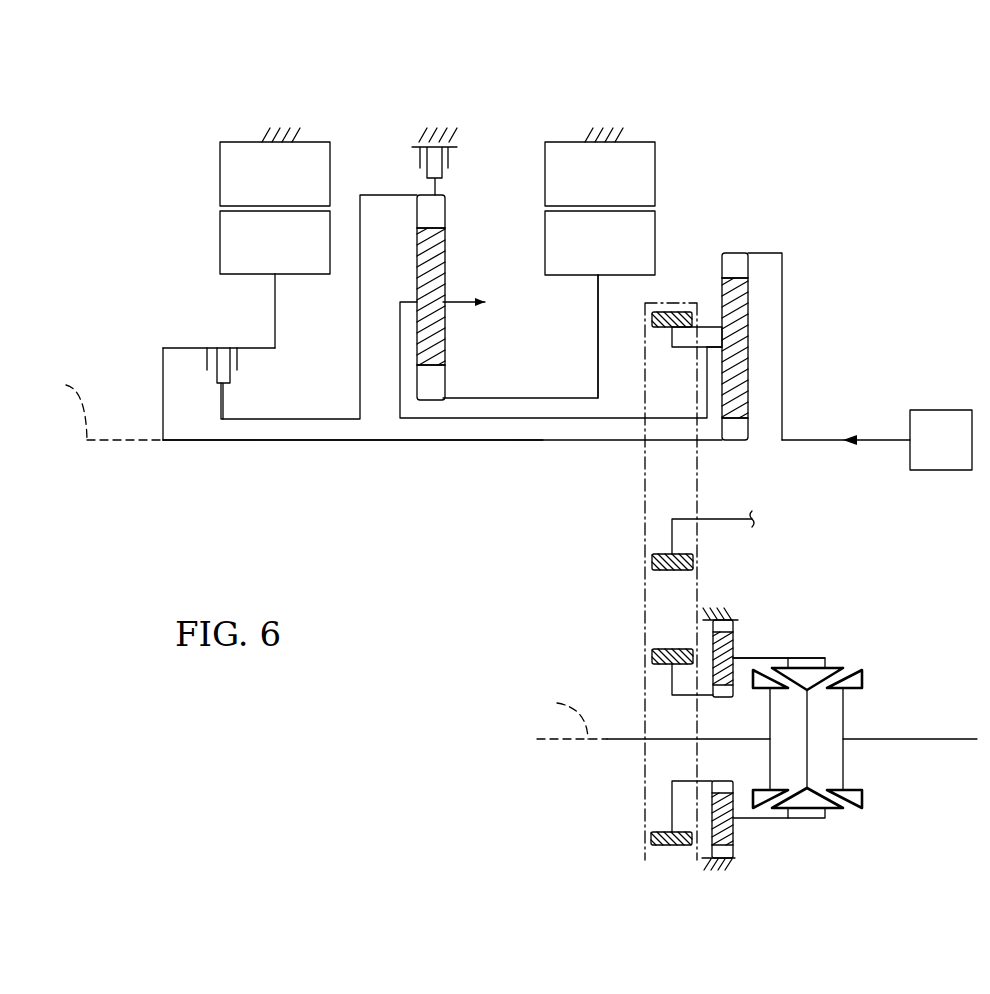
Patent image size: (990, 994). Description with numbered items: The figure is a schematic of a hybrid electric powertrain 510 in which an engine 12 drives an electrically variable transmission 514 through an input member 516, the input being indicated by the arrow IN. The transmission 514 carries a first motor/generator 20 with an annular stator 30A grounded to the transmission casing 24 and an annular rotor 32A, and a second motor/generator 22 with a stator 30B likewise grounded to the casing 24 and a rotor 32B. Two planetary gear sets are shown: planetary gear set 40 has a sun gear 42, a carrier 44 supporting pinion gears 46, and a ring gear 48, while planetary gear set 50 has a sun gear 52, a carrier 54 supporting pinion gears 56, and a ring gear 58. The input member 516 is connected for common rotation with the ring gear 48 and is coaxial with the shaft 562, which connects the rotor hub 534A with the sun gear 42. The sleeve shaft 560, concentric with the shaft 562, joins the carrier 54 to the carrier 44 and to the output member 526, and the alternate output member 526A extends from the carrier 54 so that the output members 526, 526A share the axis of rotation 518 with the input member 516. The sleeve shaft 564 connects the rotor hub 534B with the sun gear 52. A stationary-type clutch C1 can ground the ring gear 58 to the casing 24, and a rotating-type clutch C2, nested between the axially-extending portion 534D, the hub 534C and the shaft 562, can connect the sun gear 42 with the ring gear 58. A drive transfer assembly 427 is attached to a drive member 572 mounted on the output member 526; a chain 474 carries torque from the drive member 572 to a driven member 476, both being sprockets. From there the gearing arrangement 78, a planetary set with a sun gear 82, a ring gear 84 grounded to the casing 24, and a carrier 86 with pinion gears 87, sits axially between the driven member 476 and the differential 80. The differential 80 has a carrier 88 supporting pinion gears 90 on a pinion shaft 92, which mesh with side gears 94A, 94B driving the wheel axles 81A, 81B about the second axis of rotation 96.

The engine 12 is at (941, 440).
The first motor/generator 20 is at (202, 209).
The second motor/generator 22 is at (676, 209).
The transmission casing 24 is at (265, 137).
The annular stator 30A is at (275, 174).
The annular stator 30B is at (600, 174).
The annular rotor 32A is at (275, 242).
The annular rotor 32B is at (600, 243).
The first planetary gear set 40 is at (758, 370).
The sun gear 42 is at (733, 440).
The carrier 44 is at (719, 347).
The pinion gears 46 is at (750, 330).
The ring gear 48 is at (735, 253).
The second planetary gear set 50 is at (394, 345).
The sun gear 52 is at (446, 382).
The carrier 54 is at (412, 302).
The pinion gears 56 is at (446, 275).
The ring gear 58 is at (447, 208).
The gearing arrangement 78 is at (750, 832).
The differential 80 is at (878, 642).
The wheel axle 81A is at (625, 740).
The wheel axle 81B is at (900, 739).
The sun gear 82 is at (720, 699).
The ring gear 84 is at (733, 633).
The carrier 86 is at (762, 658).
The pinion gears 87 is at (738, 667).
The carrier 88 is at (810, 658).
The pinion gears 90 is at (833, 808).
The pinion shaft 92 is at (810, 748).
The side gear 94A is at (742, 803).
The side gear 94B is at (862, 797).
The second axis of rotation 96 is at (567, 715).
The drive transfer assembly 427 is at (882, 556).
The chain 474 is at (645, 483).
The driven member 476 is at (663, 649).
The powertrain 510 is at (780, 172).
The electrically variable transmission 514 is at (692, 152).
The input member 516 is at (804, 440).
The axis of rotation 518 is at (91, 406).
The output member 526 is at (687, 347).
The alternate output member 526A is at (462, 302).
The rotor hub 534A is at (276, 342).
The rotor hub 534B is at (600, 372).
The hub 534C is at (163, 394).
The axially-extending portion 534D is at (186, 346).
The sleeve shaft 560 is at (463, 419).
The shaft 562 is at (543, 440).
The sleeve shaft 564 is at (515, 398).
The drive member 572 is at (670, 312).
The stationary-type clutch C1 is at (461, 148).
The rotating-type clutch C2 is at (246, 387).
The input IN is at (850, 427).